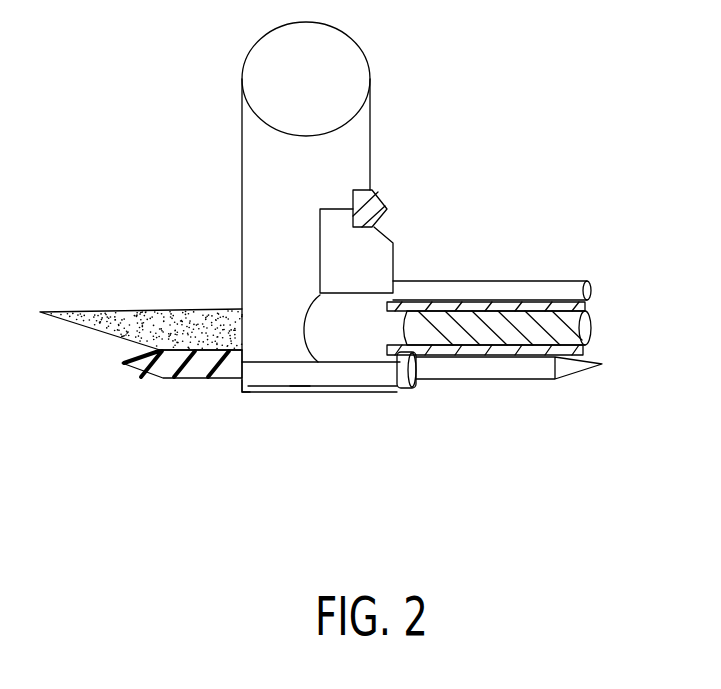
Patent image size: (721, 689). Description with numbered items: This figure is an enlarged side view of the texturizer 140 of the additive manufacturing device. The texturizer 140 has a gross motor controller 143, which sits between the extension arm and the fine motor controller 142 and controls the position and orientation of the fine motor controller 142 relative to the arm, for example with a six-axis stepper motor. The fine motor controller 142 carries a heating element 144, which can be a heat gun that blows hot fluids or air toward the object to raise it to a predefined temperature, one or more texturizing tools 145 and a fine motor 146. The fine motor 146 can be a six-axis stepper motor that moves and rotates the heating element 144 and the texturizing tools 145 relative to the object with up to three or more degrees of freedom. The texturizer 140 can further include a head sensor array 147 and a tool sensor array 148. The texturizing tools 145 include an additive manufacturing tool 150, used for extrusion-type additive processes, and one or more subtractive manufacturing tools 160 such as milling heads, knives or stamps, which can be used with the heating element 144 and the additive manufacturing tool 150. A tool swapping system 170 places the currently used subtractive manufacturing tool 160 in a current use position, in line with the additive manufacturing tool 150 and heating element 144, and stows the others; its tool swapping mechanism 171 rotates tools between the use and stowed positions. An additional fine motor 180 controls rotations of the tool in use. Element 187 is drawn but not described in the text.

The texturizer 140 is at (340, 387).
The fine motor controller 142 is at (242, 133).
The gross motor controller 143 is at (240, 72).
The heating element 144 is at (593, 327).
The texturizing tools 145 is at (321, 383).
The subtractive manufacturing tools 160 is at (162, 378).
The fine motor 146 is at (318, 302).
The head sensor array 147 is at (380, 190).
The tool sensor array 148 is at (463, 293).
The additive manufacturing tool 150 is at (573, 288).
The tool swapping system 170 is at (243, 393).
The tool swapping mechanism 171 is at (298, 375).
The additional fine motor 180 is at (410, 387).
The lower plate 187 is at (582, 351).